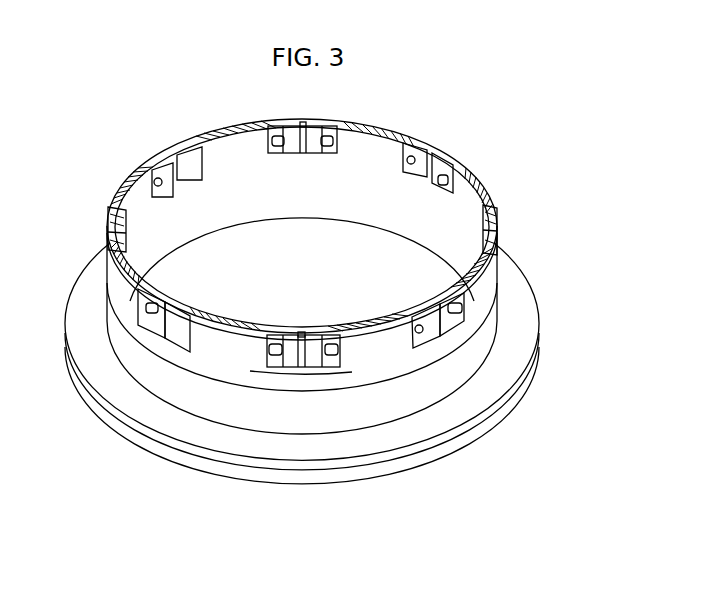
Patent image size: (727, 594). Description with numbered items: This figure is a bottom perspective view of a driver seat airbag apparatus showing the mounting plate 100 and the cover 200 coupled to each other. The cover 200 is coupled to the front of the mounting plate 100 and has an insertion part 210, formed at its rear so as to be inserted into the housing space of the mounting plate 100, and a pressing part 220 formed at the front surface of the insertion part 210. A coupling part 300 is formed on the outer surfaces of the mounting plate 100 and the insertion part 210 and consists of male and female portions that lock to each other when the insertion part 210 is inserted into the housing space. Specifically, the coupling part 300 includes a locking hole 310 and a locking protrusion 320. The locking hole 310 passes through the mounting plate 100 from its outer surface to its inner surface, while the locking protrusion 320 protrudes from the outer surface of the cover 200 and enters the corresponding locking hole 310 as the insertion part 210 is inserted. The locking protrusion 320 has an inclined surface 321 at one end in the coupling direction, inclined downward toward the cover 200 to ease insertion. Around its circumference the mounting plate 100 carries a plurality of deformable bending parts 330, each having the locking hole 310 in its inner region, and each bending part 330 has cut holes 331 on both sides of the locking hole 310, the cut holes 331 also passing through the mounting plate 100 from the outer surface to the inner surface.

The mounting plate 100 is at (452, 371).
The cover 200 is at (408, 443).
The insertion part 210 is at (472, 173).
The pressing part 220 is at (456, 440).
The coupling part 300 is at (266, 371).
The locking hole 310 is at (168, 172).
The locking protrusion 320 is at (289, 362).
The inclined surface 321 is at (305, 367).
The bending part 330 is at (165, 345).
The cut hole 331 is at (268, 362).